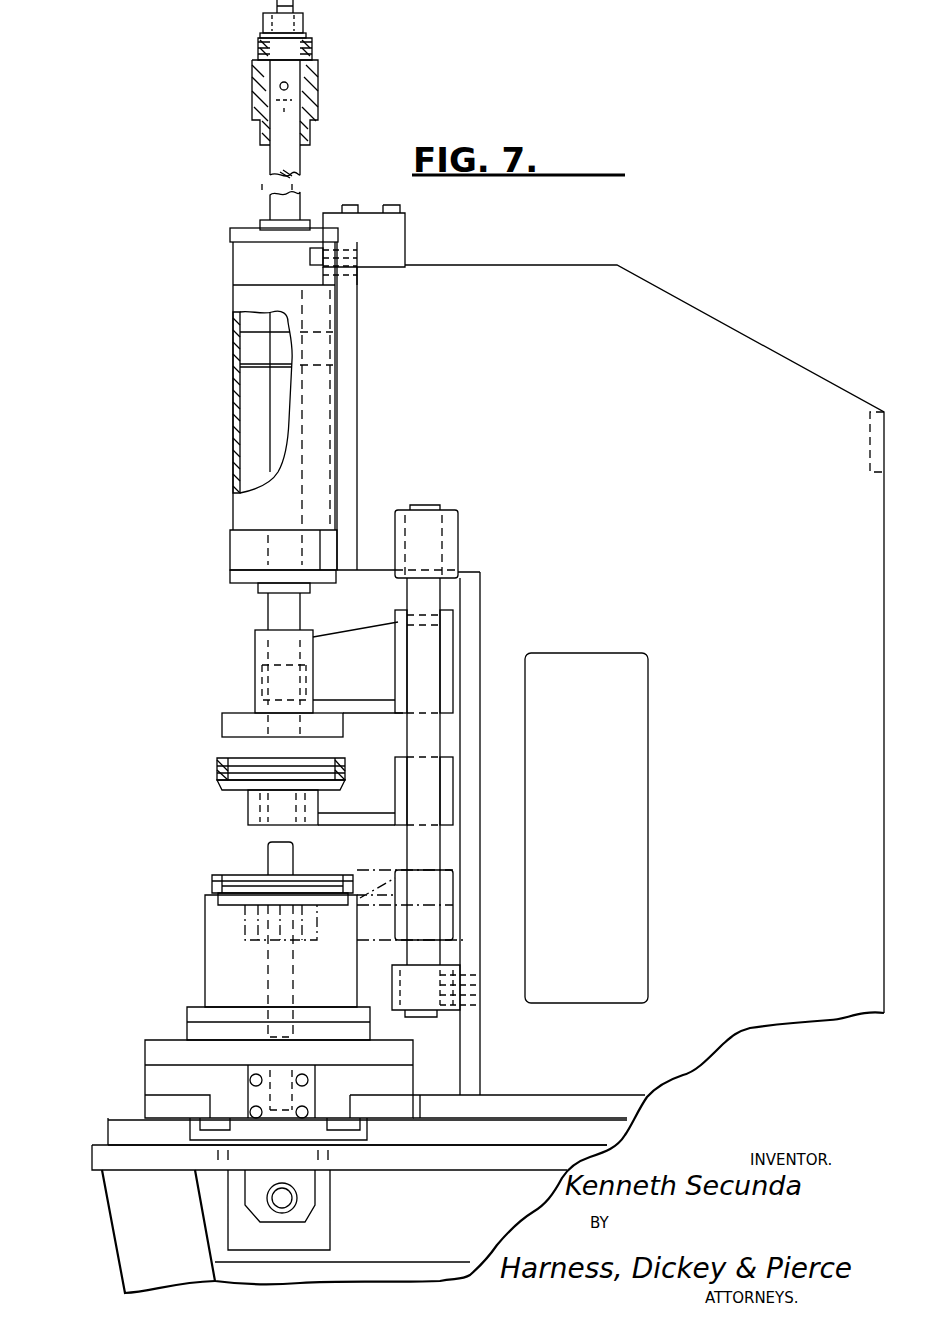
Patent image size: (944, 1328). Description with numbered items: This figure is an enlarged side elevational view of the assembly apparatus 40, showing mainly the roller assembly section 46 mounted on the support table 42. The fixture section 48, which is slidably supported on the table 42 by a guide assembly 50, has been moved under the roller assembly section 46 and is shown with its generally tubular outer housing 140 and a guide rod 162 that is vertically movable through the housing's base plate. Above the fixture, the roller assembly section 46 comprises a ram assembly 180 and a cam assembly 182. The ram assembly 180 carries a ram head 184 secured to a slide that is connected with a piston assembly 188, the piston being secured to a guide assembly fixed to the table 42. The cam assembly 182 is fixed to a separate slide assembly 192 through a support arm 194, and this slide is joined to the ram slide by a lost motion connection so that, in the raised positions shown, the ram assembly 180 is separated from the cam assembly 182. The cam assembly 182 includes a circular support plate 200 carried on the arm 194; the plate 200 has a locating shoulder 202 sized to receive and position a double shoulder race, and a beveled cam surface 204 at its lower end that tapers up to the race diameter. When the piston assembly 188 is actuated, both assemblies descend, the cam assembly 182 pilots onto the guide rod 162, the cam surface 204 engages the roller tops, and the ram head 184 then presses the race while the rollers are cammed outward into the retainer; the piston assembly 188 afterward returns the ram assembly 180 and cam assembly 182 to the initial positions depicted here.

The assembly apparatus 40 is at (152, 297).
The piston assembly 188 is at (225, 393).
The roller assembly section 46 is at (430, 490).
The ram assembly 180 is at (456, 660).
The slide assembly 192 is at (460, 755).
The cam assembly 182 is at (460, 792).
The ram head 184 is at (232, 718).
The support arm 194 is at (378, 780).
The locating shoulder 202 is at (265, 775).
The cam surface 204 is at (235, 790).
The support plate 200 is at (248, 815).
The guide rod 162 is at (283, 862).
The outer housing 140 is at (207, 945).
The fixture section 48 is at (200, 975).
The guide assembly 50 is at (122, 1120).
The support table 42 is at (125, 1235).